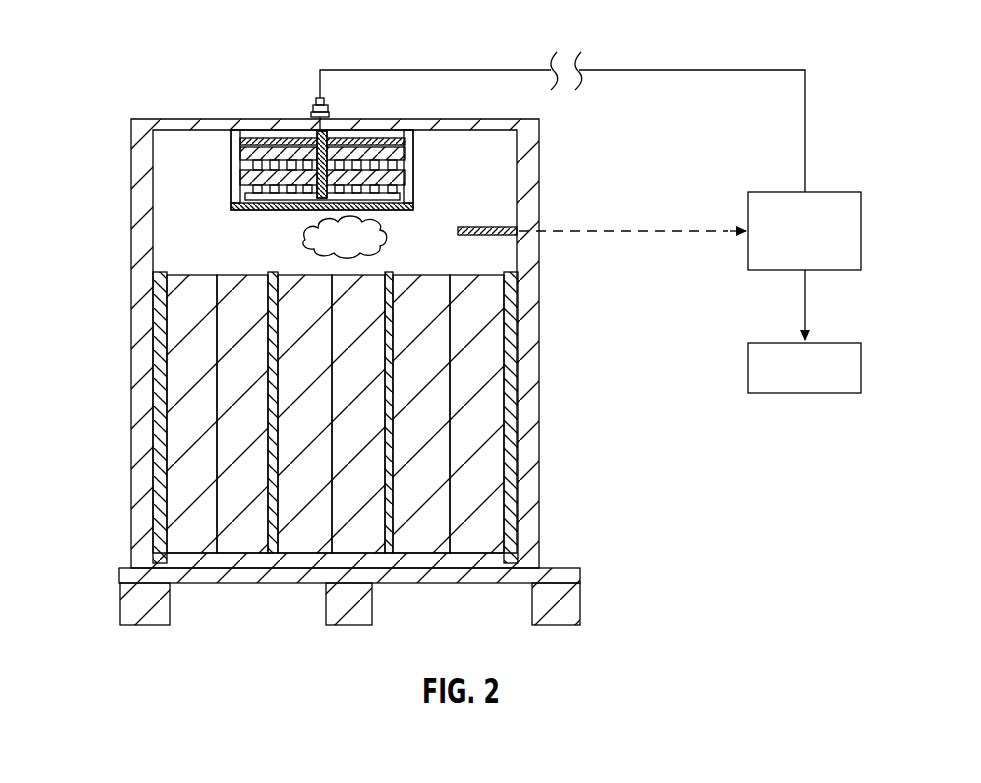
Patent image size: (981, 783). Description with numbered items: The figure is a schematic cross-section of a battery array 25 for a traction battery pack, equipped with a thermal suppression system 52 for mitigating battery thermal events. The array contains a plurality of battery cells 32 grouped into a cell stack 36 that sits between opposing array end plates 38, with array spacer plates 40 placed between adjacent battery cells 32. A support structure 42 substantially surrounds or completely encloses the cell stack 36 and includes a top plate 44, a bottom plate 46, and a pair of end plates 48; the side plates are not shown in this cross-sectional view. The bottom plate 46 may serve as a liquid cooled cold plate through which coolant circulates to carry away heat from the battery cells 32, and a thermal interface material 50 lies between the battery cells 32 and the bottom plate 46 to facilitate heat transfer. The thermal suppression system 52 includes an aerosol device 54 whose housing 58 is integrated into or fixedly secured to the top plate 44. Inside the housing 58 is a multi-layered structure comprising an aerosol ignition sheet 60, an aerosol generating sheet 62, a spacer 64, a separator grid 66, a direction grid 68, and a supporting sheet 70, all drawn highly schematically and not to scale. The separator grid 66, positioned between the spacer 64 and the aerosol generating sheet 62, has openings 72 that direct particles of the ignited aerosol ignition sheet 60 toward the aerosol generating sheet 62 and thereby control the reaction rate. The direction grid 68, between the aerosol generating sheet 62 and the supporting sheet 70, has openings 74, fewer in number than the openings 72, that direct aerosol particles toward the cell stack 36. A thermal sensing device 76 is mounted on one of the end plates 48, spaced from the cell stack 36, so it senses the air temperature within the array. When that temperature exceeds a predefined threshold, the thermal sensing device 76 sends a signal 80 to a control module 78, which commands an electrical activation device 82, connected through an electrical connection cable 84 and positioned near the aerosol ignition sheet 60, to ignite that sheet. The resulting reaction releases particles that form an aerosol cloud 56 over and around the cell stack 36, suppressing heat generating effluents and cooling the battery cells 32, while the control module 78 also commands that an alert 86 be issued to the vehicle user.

The battery array 25 is at (594, 46).
The battery cells 32 is at (188, 538).
The cell stack 36 is at (340, 419).
The array end plates 38 is at (160, 342).
The array spacer plates 40 is at (273, 340).
The support structure 42 is at (113, 112).
The top plate 44 is at (427, 120).
The bottom plate 46 is at (562, 578).
The end plates 48 is at (143, 463).
The thermal interface material 50 is at (490, 560).
The thermal suppression system 52 is at (727, 57).
The aerosol device 54 is at (309, 165).
The aerosol cloud 56 is at (383, 242).
The housing 58 is at (230, 171).
The aerosol ignition sheet 60 is at (258, 150).
The aerosol generating sheet 62 is at (408, 186).
The spacer 64 is at (406, 156).
The separator grid 66 is at (380, 163).
The direction grid 68 is at (377, 212).
The supporting sheet 70 is at (243, 212).
The openings 72 is at (307, 162).
The openings 74 is at (276, 211).
The thermal sensing device 76 is at (505, 236).
The control module 78 is at (780, 192).
The signal 80 is at (630, 230).
The electrical activation device 82 is at (318, 100).
The electrical connection cable 84 is at (445, 69).
The alert 86 is at (782, 343).